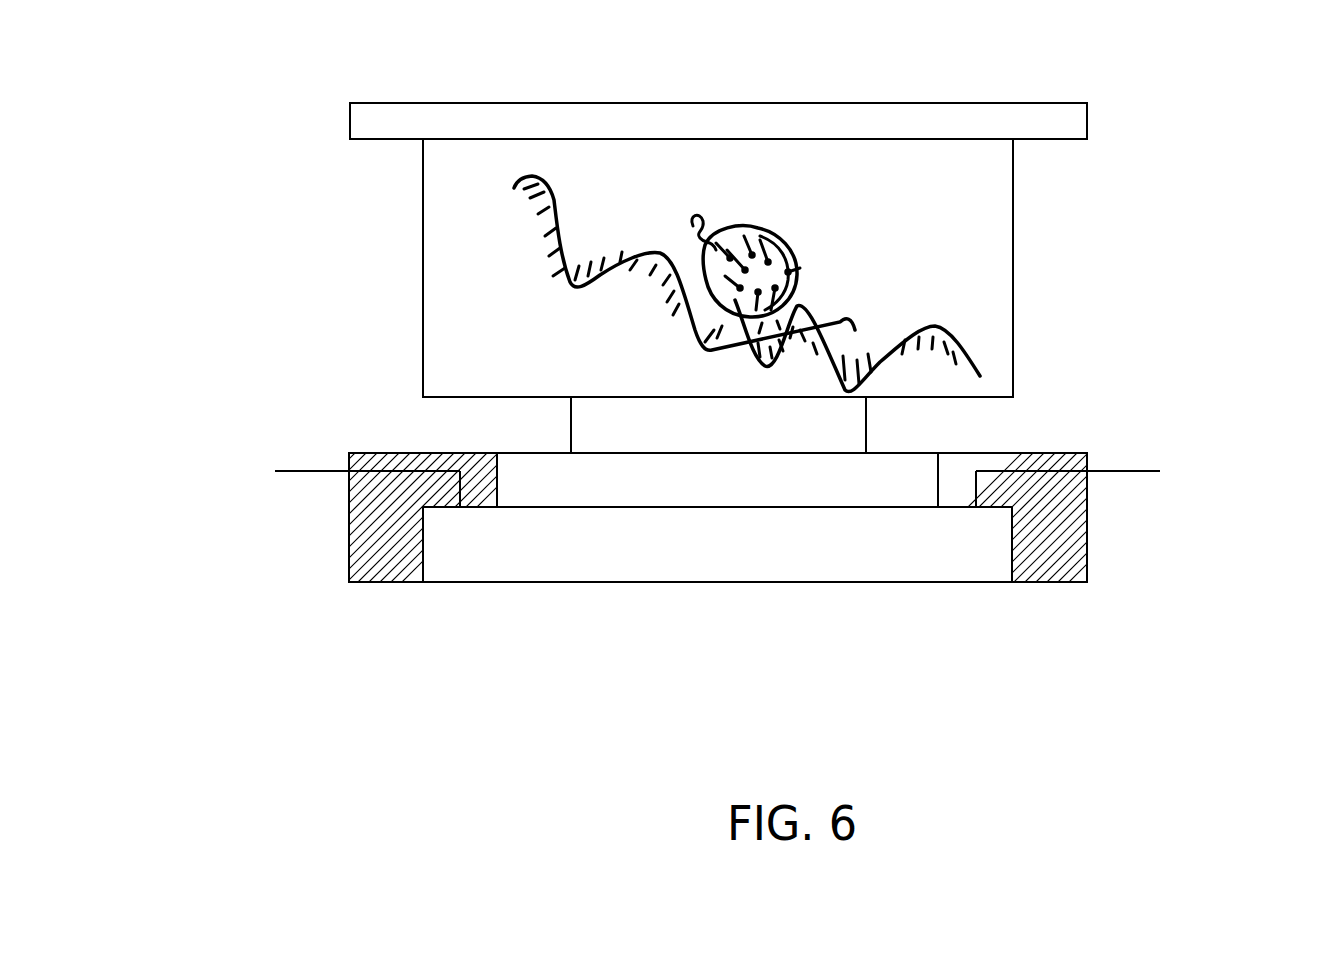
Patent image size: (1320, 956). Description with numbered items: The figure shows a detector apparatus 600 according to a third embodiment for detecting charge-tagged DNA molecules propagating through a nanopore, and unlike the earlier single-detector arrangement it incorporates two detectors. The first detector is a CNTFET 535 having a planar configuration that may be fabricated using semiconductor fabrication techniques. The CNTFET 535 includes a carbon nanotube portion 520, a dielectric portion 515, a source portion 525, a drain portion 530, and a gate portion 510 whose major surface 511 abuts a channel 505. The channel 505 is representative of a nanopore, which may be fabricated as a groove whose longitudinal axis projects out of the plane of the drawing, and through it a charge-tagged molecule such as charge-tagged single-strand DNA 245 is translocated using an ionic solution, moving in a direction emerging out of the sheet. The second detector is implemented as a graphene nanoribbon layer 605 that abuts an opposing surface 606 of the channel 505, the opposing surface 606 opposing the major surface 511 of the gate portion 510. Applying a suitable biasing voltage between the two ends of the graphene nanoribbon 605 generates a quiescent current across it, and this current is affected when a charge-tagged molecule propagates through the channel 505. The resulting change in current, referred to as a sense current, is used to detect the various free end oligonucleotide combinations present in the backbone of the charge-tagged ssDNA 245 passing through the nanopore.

The detector apparatus 600 is at (252, 117).
The graphene nanoribbon layer 605 is at (718, 121).
The opposing surface 606 is at (826, 148).
The charge-tagged single-strand DNA 245 is at (878, 236).
The channel 505 is at (1015, 259).
The major surface 511 is at (627, 386).
The gate portion 510 is at (718, 425).
The dielectric portion 515 is at (717, 480).
The carbon nanotube portion 520 is at (717, 544).
The source portion 525 is at (396, 452).
The drain portion 530 is at (1013, 452).
The CNTFET 535 is at (1190, 436).